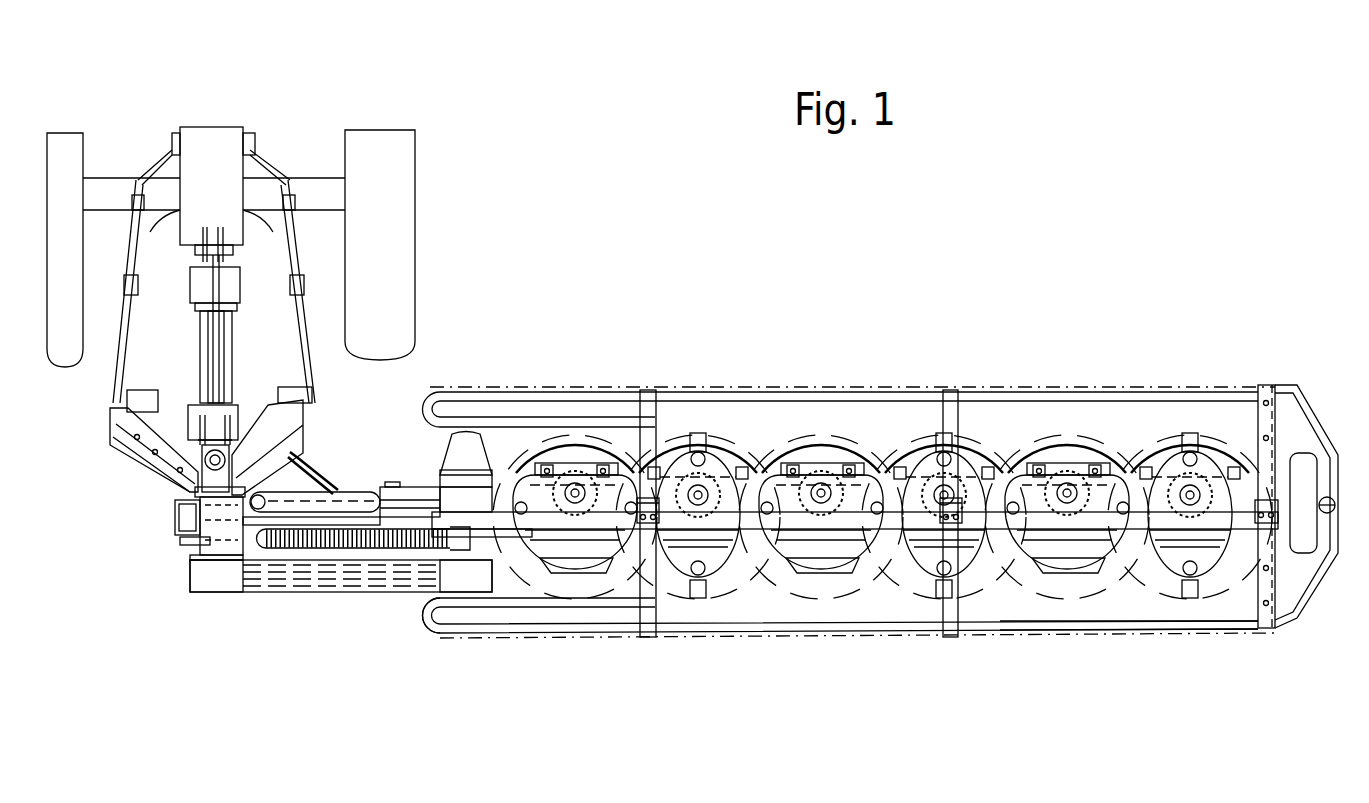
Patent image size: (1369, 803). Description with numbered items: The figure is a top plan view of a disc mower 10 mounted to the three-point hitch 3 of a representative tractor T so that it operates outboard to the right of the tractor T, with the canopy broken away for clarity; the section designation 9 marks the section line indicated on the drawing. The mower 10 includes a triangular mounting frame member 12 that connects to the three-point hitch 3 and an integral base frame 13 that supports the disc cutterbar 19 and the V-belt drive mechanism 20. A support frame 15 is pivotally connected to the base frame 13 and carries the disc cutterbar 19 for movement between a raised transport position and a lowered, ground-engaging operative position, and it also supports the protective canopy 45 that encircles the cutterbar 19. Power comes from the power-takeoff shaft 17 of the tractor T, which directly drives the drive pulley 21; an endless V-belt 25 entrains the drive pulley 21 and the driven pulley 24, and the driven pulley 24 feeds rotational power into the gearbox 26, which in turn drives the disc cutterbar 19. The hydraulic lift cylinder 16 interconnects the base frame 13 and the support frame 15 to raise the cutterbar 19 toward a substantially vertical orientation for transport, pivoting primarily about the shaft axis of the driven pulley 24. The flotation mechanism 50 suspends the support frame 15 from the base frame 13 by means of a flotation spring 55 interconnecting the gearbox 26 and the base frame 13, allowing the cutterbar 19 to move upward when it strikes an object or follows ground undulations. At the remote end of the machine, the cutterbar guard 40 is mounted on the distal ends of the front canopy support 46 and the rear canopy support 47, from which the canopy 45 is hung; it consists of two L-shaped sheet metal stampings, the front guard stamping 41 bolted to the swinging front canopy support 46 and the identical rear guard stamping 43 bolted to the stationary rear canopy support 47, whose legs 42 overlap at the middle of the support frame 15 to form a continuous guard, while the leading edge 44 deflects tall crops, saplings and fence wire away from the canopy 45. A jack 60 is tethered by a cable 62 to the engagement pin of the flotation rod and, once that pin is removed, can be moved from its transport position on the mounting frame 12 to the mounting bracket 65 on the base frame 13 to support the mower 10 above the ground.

The tractor T is at (407, 178).
The three-point hitch 3 is at (307, 322).
The disc mower 10 is at (1045, 207).
The triangular mounting frame member 12 is at (177, 415).
The base frame 13 is at (200, 496).
The support frame 15 is at (403, 523).
The hydraulic lift cylinder 16 is at (287, 503).
The power-takeoff (PTO) shaft 17 is at (197, 292).
The disc cutterbar 19 is at (1068, 462).
The V-belt drive mechanism 20 is at (240, 604).
The drive pulley 21 is at (207, 594).
The driven pulley 24 is at (475, 592).
The endless V-belt 25 is at (332, 592).
The gearbox 26 is at (500, 452).
The cutterbar guard 40 is at (1302, 443).
The front guard stamping 41 is at (1308, 392).
The legs 42 is at (1350, 530).
The rear guard stamping 43 is at (1320, 603).
The leading edge 44 is at (1333, 392).
The protective canopy 45 is at (1182, 642).
The front canopy support 46 is at (855, 390).
The rear canopy support 47 is at (890, 628).
The flotation mechanism 50 is at (178, 559).
The flotation spring 55 is at (360, 550).
The jack 60 is at (142, 458).
The cable 62 is at (175, 510).
The mounting bracket 65 is at (180, 540).
The section line 9- 9 is at (510, 723).